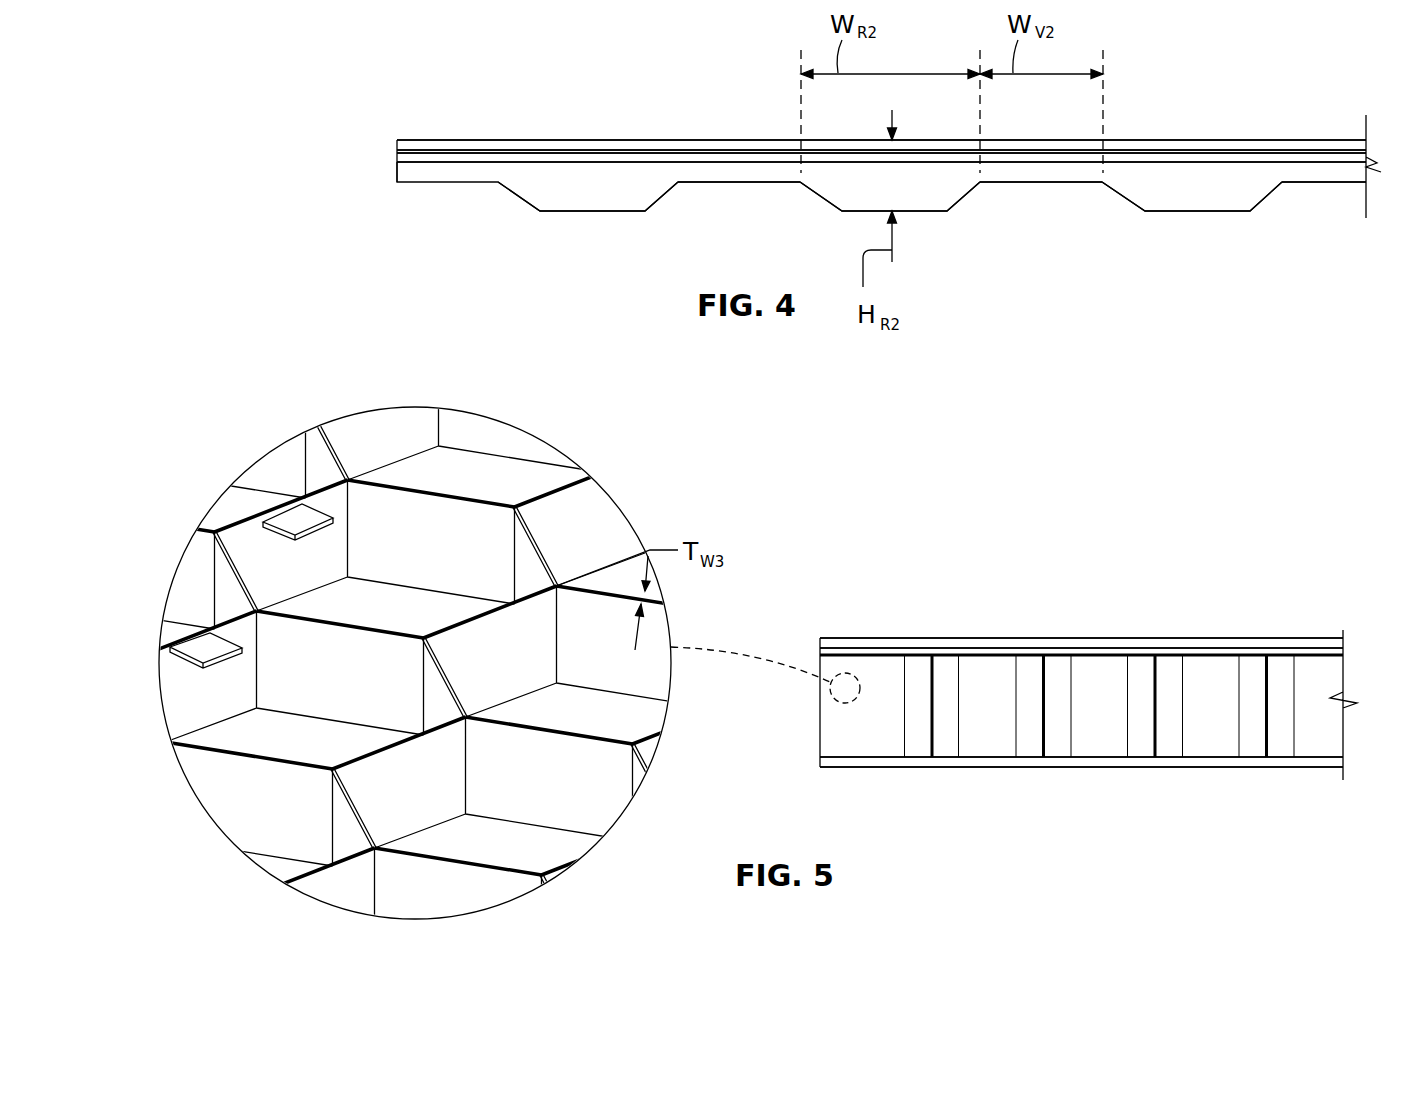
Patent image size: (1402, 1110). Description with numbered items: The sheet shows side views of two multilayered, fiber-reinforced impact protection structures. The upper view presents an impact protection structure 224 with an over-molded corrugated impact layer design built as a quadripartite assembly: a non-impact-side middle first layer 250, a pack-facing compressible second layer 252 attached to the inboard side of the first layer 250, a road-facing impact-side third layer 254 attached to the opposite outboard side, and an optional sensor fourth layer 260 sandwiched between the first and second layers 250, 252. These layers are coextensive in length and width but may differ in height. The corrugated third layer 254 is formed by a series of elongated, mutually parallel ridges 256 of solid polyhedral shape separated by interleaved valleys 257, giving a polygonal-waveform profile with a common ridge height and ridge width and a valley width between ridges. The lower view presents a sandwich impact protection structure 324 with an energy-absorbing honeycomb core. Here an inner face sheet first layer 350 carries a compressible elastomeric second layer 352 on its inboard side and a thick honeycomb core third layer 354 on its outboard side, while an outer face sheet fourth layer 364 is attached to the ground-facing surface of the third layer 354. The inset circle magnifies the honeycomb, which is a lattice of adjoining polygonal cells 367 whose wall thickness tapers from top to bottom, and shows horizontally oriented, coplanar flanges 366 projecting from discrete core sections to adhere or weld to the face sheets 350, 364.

In FIG. 4, the impact protection structure 224 is at (375, 68).
In FIG. 4, the second layer 252 is at (397, 142).
In FIG. 4, the fourth layer 260 is at (397, 150).
In FIG. 4, the first layer 250 is at (397, 157).
In FIG. 4, the third layer 254 is at (397, 172).
In FIG. 4, the ridges 256 is at (590, 213).
In FIG. 4, the valleys 257 is at (735, 186).
In FIG. 5, the sandwich impact protection structure 324 is at (946, 580).
In FIG. 5, the second layer 352 is at (820, 642).
In FIG. 5, the fourth layer 364 is at (820, 765).
In FIG. 5, the first layer 350 is at (820, 649).
In FIG. 5, the third layer 354 is at (270, 430).
In FIG. 5, the flanges 366 is at (292, 507).
In FIG. 5, the cells 367 is at (250, 516).